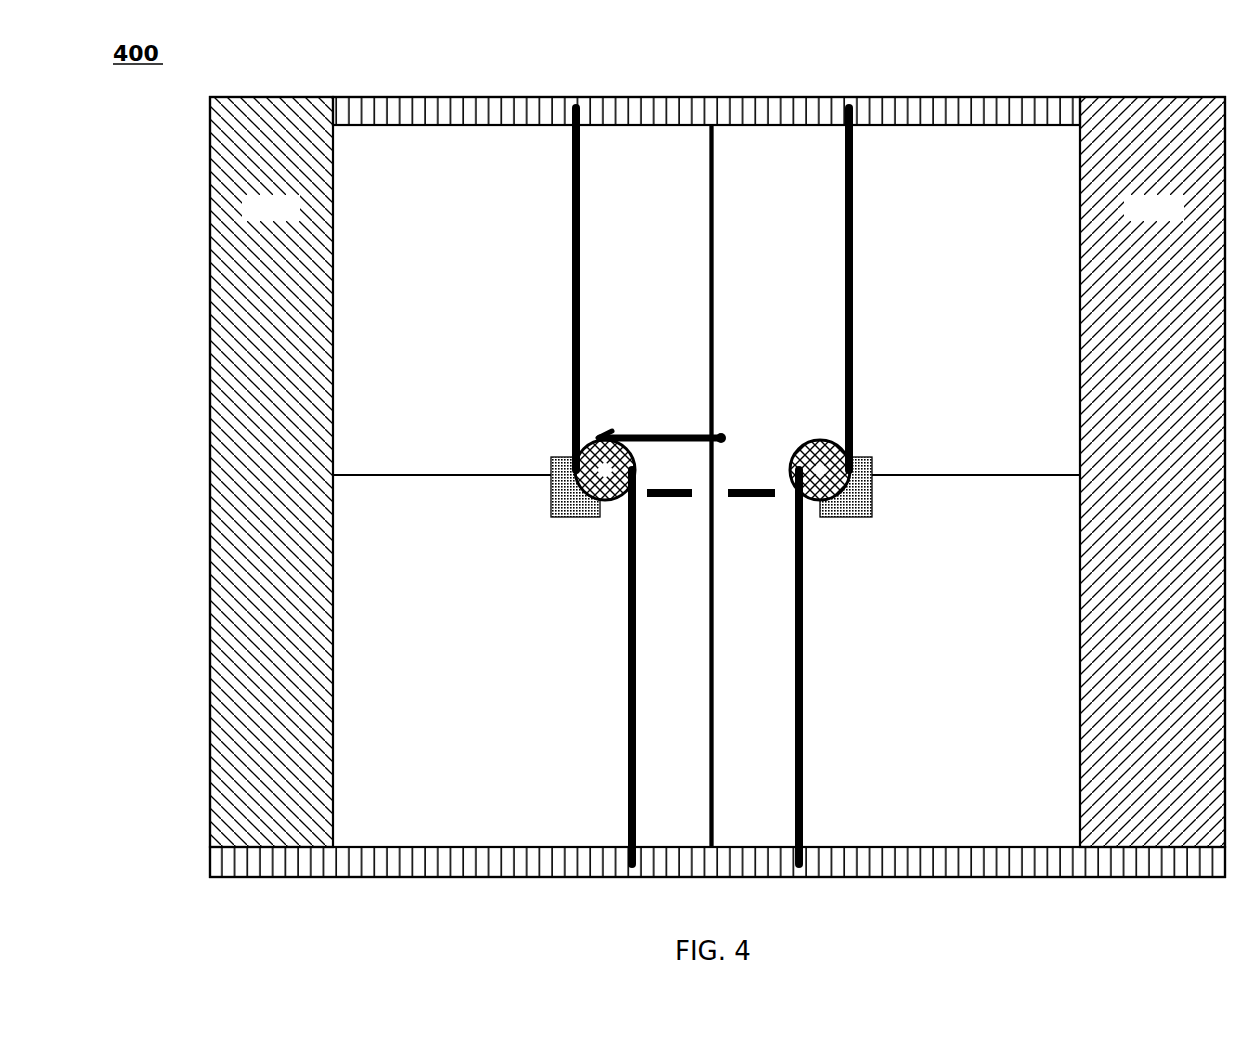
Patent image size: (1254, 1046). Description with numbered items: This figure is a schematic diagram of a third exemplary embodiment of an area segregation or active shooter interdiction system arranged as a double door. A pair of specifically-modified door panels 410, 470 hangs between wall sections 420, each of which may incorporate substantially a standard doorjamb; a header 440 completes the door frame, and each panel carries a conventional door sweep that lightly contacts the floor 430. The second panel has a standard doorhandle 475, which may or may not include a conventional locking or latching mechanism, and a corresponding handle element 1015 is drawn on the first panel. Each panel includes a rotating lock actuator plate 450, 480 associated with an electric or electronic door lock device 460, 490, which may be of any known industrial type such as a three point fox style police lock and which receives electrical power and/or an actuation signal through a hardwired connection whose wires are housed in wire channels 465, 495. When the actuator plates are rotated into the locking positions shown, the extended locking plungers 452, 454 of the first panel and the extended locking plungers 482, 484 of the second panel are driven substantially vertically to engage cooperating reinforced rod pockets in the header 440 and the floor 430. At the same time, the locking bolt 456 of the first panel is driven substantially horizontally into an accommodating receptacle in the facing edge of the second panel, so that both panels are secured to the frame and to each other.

The specifically-modified door panel 410 is at (521, 486).
The wall section 420 is at (717, 472).
The floor 430 is at (468, 860).
The header 440 is at (472, 118).
The rotating lock actuator plate 450 is at (568, 455).
The extended locking plunger 452 is at (572, 300).
The extended locking plunger 454 is at (628, 649).
The locking bolt 456 is at (660, 434).
The electric/electronic door lock device 460 is at (552, 517).
The wire channel 465 is at (428, 478).
The specifically-modified door panel 470 is at (896, 486).
The standard doorhandle 475 is at (746, 511).
The rotating lock actuator plate 480 is at (856, 455).
The extended locking plunger 482 is at (853, 300).
The extended locking plunger 484 is at (803, 651).
The electric/electronic door lock device 490 is at (878, 517).
The wire channel 495 is at (1005, 478).
The first stop 1015 is at (671, 511).